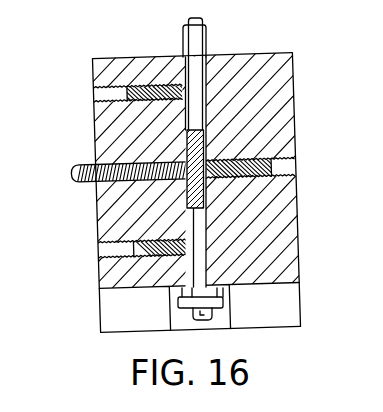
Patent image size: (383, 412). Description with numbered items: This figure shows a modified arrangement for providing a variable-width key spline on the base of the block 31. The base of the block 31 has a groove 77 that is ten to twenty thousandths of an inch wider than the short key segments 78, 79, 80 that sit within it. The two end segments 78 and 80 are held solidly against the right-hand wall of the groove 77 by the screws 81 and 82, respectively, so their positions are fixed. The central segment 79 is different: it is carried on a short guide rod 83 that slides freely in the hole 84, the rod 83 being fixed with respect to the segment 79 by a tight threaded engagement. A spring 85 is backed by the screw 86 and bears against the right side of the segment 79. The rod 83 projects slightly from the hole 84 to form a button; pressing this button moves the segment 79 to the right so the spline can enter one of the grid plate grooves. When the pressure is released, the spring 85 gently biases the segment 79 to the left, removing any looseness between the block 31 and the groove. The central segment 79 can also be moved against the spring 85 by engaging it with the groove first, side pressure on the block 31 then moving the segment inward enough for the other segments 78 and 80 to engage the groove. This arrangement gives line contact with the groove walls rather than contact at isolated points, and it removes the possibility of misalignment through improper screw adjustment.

The block 31 is at (294, 81).
The groove 77 is at (183, 70).
The short key segment 78 is at (200, 82).
The central segment 79 is at (203, 140).
The short key segment 80 is at (207, 243).
The screw 81 is at (180, 90).
The screw 82 is at (157, 240).
The guide rod 83 is at (76, 168).
The hole 84 is at (140, 165).
The spring 85 is at (228, 181).
The screw 86 is at (255, 178).